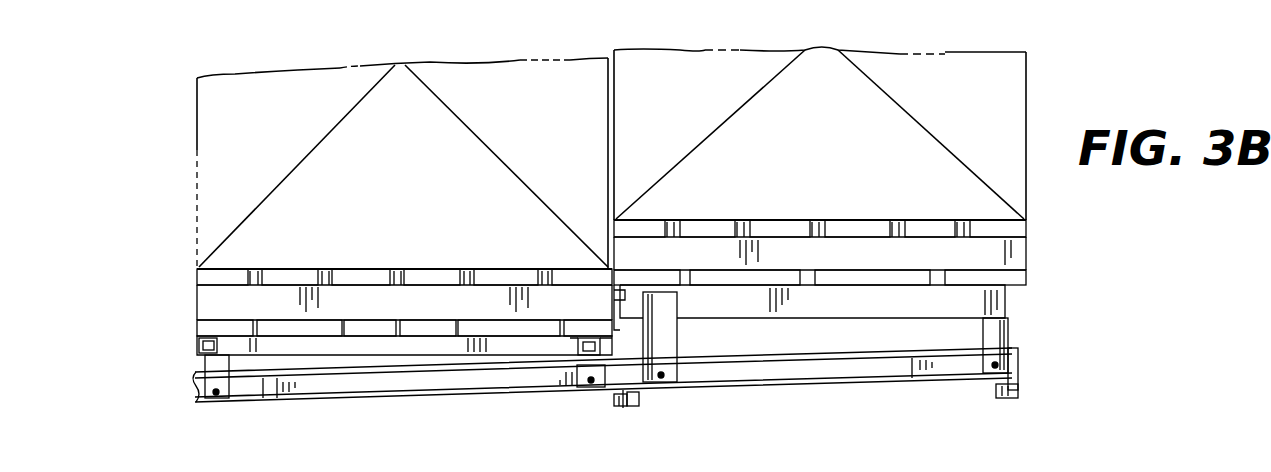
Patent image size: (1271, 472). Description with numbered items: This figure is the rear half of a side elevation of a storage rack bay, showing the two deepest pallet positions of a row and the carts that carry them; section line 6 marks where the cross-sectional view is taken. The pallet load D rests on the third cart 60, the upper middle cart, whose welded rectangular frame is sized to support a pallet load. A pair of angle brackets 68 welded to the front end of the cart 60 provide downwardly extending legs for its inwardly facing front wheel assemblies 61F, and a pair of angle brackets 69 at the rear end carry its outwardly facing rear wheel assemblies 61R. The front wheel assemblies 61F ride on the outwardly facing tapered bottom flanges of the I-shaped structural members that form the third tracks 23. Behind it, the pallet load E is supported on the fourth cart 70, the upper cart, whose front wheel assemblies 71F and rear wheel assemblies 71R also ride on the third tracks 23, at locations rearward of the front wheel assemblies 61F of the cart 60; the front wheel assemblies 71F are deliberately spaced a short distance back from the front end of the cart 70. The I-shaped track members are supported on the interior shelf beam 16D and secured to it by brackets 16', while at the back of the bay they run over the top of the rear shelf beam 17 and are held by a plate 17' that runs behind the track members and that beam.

The section line 6— 6 is at (210, 57).
The pallet load D is at (236, 124).
The pallet load E is at (960, 103).
The angle brackets 68 is at (220, 357).
The angle brackets 69 is at (580, 355).
The third tracks 23 is at (462, 390).
The third cart 60 is at (375, 405).
The front wheel assemblies 61F is at (224, 400).
The rear wheel assemblies 61R is at (592, 384).
The fourth cart 70 is at (860, 338).
The front wheel assemblies 71F is at (660, 374).
The rear wheel assemblies 71R is at (995, 365).
The plate 17' is at (1054, 369).
The rear shelf beam 17 is at (1038, 428).
The brackets 16' is at (664, 410).
The interior shelf beam 16D is at (632, 404).